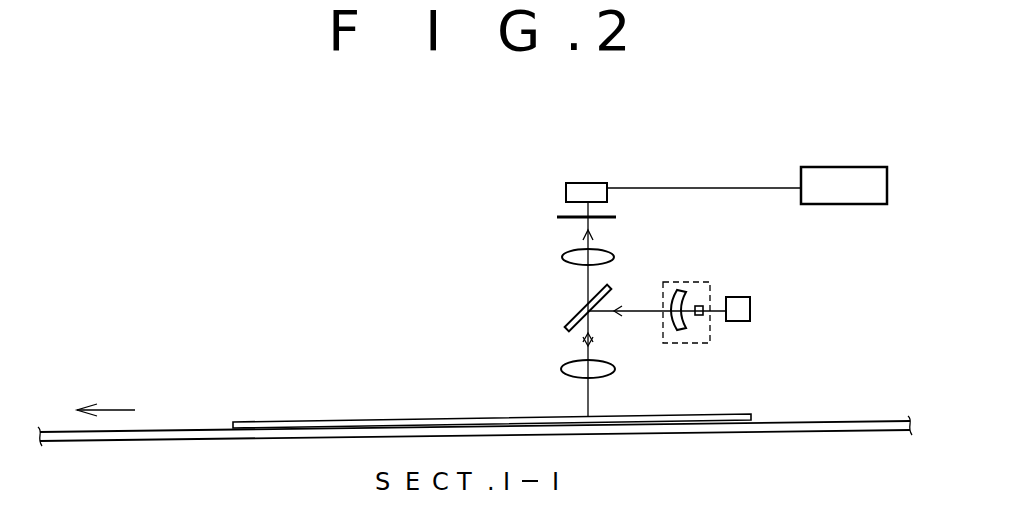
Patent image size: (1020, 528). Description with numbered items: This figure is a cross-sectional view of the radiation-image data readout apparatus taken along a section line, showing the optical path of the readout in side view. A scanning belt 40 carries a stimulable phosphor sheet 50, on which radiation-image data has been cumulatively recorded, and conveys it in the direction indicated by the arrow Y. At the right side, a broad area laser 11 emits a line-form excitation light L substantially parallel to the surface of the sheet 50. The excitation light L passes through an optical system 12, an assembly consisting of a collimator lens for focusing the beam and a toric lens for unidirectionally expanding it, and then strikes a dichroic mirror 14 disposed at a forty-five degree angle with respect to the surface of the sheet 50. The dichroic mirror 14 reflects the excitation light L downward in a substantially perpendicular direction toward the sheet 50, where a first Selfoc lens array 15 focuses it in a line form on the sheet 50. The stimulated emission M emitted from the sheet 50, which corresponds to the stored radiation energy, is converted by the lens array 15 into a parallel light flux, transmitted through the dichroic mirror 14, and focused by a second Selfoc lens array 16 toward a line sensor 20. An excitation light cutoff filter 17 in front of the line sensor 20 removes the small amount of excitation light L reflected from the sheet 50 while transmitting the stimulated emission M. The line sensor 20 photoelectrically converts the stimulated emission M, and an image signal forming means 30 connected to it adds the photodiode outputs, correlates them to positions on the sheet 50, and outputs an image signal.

The broad area laser (BLD) 11 is at (738, 297).
The optical system 12 is at (681, 282).
The dichroic mirror 14 is at (565, 328).
The lens array (first Selfoc lens array) 15 is at (615, 369).
The second Selfoc lens array 16 is at (562, 256).
The excitation light cutoff filter 17 is at (558, 216).
The line sensor 20 is at (562, 180).
The image signal forming means 30 is at (832, 167).
The scanning belt 40 is at (853, 421).
The stimulable phosphor sheet 50 is at (283, 422).
The excitation light L is at (636, 311).
The stimulated emission M is at (586, 281).
The conveying direction Y is at (106, 398).